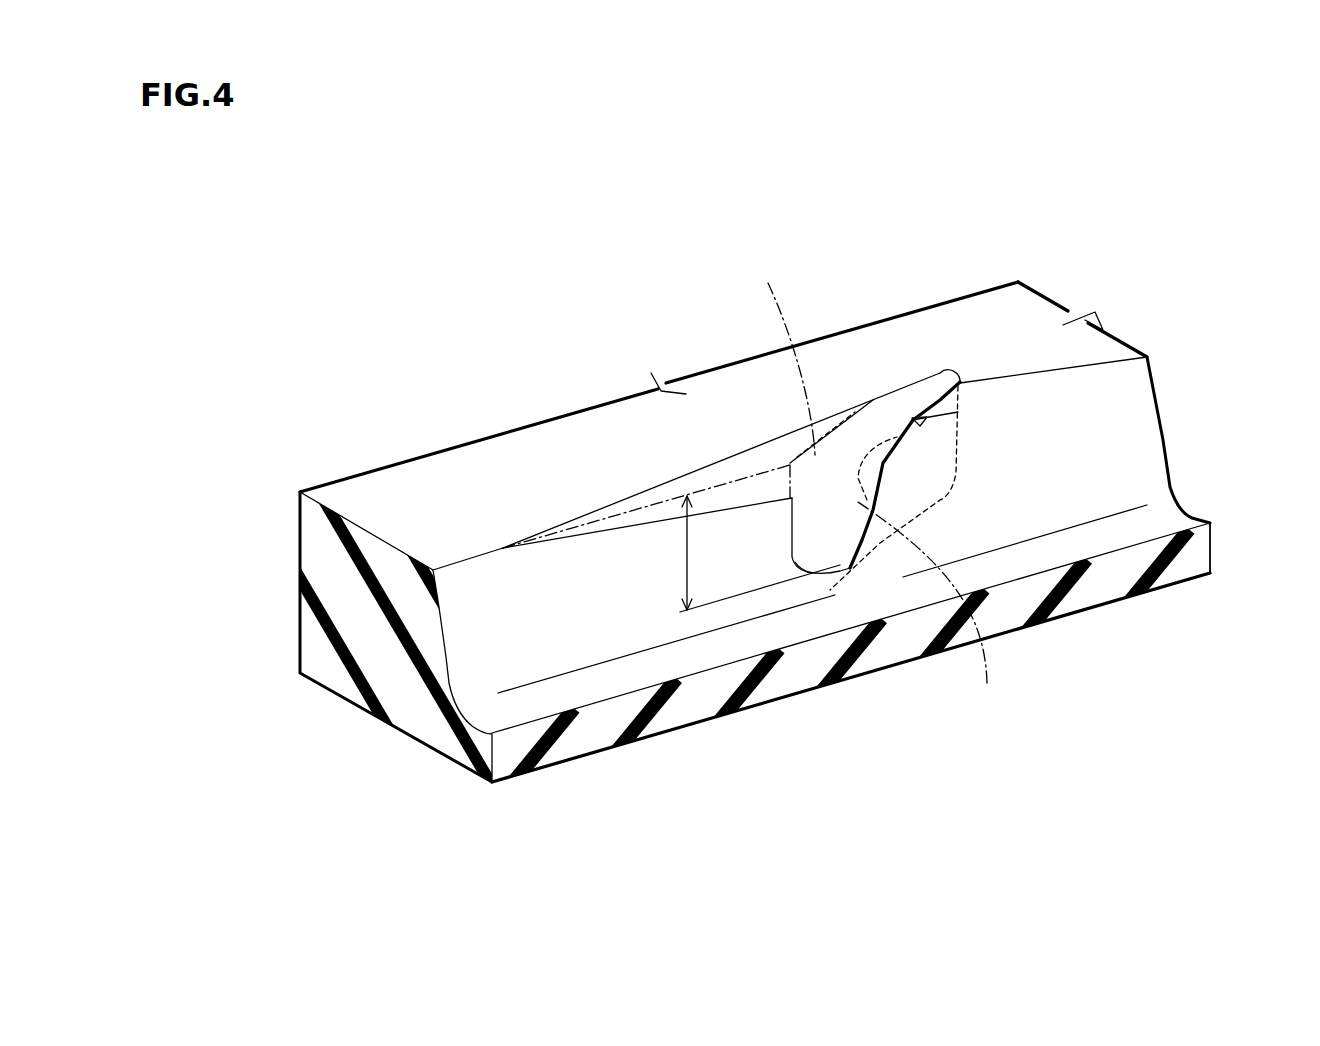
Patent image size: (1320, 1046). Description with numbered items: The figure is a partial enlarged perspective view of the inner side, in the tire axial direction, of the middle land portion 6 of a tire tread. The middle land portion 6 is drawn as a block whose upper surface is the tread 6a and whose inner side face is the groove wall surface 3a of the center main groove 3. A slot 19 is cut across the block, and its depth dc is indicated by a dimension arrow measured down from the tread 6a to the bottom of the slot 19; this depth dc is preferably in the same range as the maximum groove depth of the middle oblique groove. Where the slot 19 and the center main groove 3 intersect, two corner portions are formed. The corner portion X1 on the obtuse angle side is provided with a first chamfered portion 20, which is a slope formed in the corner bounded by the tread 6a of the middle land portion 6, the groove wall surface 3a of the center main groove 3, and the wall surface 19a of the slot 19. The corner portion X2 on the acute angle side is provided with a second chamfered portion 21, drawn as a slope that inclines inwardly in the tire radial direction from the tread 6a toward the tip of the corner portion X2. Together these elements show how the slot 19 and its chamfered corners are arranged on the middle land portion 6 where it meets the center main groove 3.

The center main groove 3 is at (752, 628).
The groove wall surface 3a is at (1130, 430).
The middle land portion 6 is at (769, 420).
The tread 6a is at (453, 468).
The slot 19 is at (807, 512).
The wall surface 19a is at (813, 540).
The first chamfered portion 20 is at (763, 457).
The second chamfered portion 21 is at (912, 418).
The corner portion X1 is at (781, 356).
The corner portion X2 is at (941, 608).
The depth dc is at (743, 554).